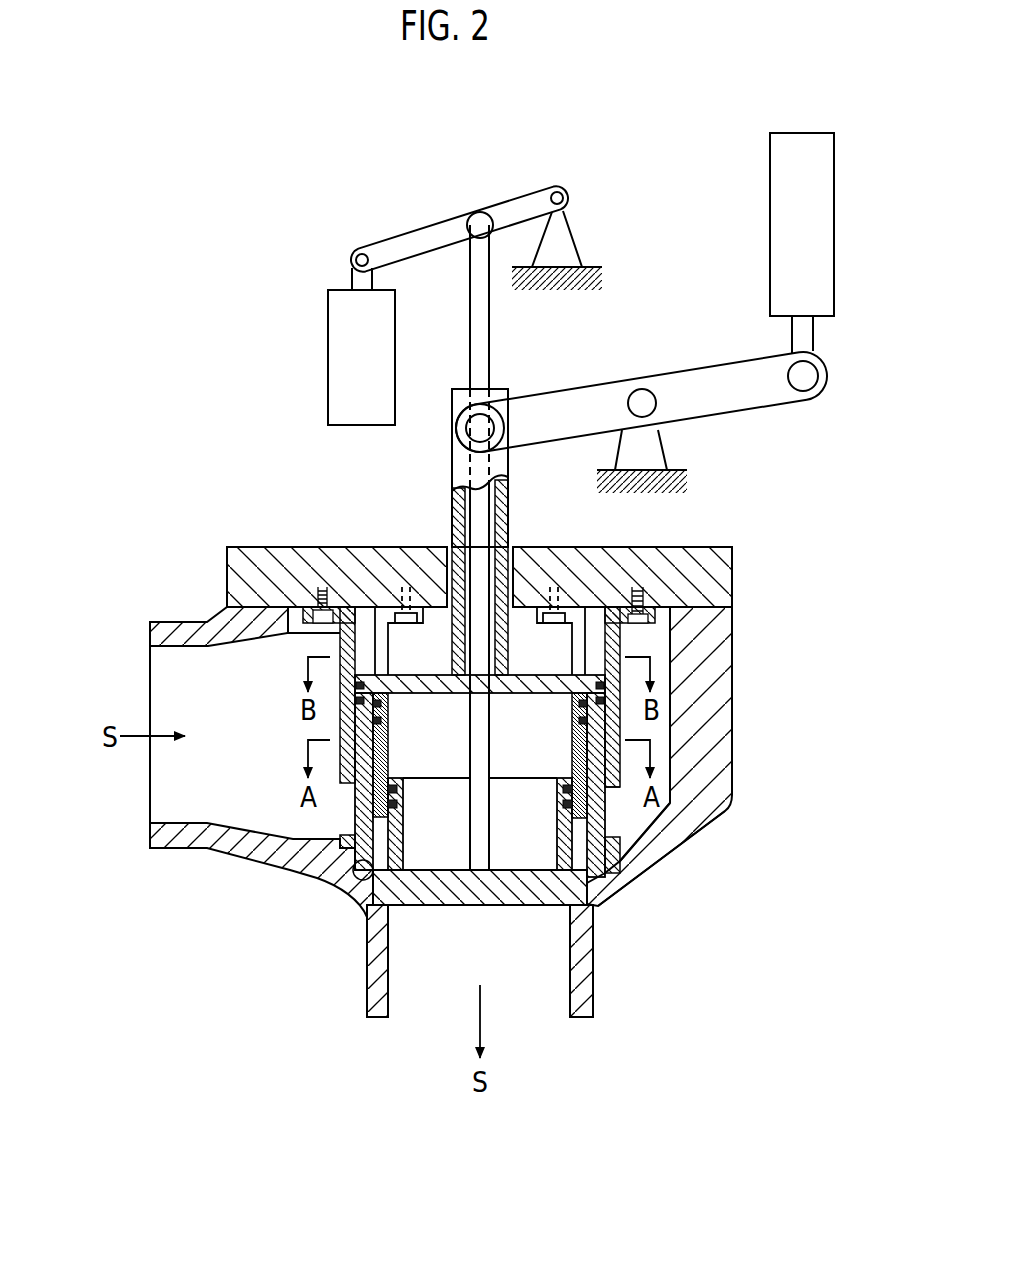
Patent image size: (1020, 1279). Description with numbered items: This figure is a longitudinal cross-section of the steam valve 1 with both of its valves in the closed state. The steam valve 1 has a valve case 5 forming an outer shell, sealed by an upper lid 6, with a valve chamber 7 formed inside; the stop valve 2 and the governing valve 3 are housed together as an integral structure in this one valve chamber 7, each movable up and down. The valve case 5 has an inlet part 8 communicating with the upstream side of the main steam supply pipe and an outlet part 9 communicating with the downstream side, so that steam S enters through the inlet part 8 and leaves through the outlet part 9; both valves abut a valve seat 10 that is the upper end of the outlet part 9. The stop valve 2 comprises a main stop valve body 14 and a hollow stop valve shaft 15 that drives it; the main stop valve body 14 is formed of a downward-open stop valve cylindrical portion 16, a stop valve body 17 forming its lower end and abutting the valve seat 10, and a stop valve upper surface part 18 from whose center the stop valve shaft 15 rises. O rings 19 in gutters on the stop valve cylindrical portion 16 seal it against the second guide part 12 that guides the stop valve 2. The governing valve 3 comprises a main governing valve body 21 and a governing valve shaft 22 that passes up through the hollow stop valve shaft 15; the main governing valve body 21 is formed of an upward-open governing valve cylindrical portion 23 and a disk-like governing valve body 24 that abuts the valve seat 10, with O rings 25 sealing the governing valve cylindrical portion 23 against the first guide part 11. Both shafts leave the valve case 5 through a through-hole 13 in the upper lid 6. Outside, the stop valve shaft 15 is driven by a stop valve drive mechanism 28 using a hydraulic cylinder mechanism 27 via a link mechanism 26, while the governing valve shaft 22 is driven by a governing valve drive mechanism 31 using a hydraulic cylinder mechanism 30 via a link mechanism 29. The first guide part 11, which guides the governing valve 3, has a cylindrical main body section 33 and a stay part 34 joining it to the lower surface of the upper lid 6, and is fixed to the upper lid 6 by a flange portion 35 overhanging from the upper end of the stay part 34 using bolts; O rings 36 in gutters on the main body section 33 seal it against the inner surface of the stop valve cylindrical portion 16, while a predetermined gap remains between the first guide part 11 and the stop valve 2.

The steam valve 1 is at (250, 186).
The stop valve 2 is at (560, 848).
The governing valve 3 is at (436, 912).
The valve case 5 is at (735, 620).
The upper lid 6 is at (692, 556).
The valve chamber 7 is at (653, 642).
The inlet part 8 is at (173, 655).
The outlet part 9 is at (560, 988).
The valve seat 10 is at (357, 860).
The first guide part 11 is at (620, 733).
The second guide part 12 is at (340, 640).
The through-hole 13 is at (500, 580).
The main stop valve body 14 is at (360, 803).
The stop valve shaft 15 is at (458, 465).
The stop valve cylindrical portion 16 is at (360, 803).
The stop valve body 17 is at (345, 845).
The stop valve upper surface part 18 is at (432, 677).
The O rings 19 is at (340, 712).
The main governing valve body 21 is at (640, 878).
The governing valve shaft 22 is at (483, 512).
The governing valve cylindrical portion 23 is at (640, 878).
The governing valve body 24 is at (514, 892).
The O rings 25 is at (612, 818).
The link mechanism 26 is at (695, 380).
The hydraulic cylinder mechanism 27 is at (780, 165).
The stop valve drive mechanism 28 is at (778, 424).
The link mechanism 29 is at (432, 232).
The hydraulic cylinder mechanism 30 is at (332, 360).
The governing valve drive mechanism 31 is at (361, 226).
The main body section 33 is at (620, 733).
The stay part 34 is at (377, 640).
The flange portion 35 is at (572, 607).
The O rings 36 is at (618, 727).